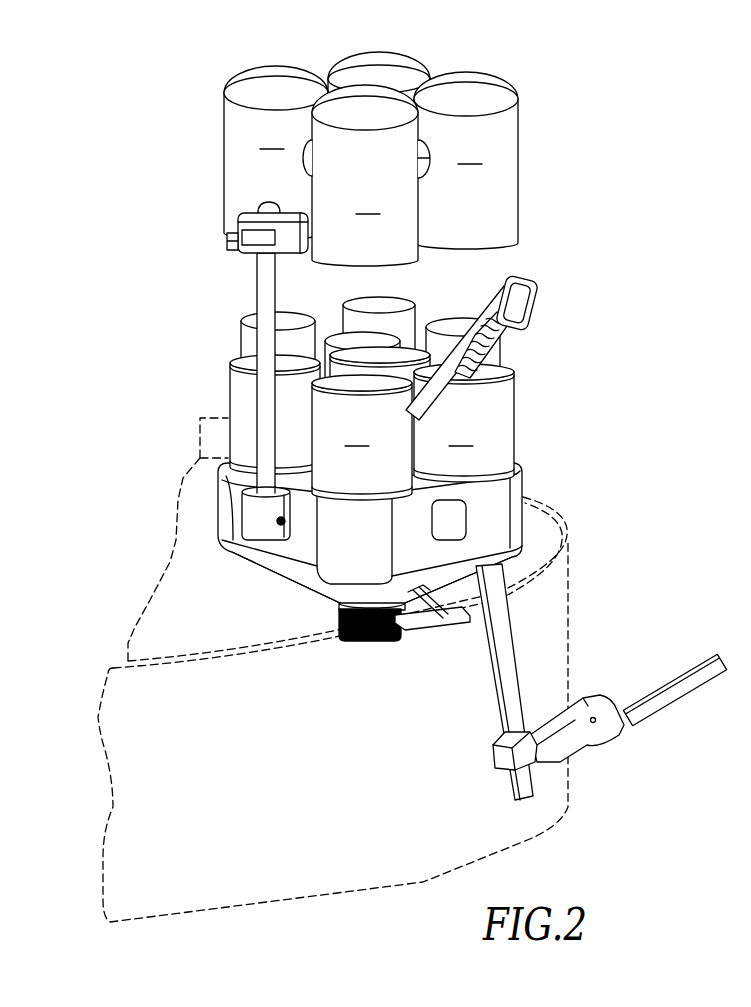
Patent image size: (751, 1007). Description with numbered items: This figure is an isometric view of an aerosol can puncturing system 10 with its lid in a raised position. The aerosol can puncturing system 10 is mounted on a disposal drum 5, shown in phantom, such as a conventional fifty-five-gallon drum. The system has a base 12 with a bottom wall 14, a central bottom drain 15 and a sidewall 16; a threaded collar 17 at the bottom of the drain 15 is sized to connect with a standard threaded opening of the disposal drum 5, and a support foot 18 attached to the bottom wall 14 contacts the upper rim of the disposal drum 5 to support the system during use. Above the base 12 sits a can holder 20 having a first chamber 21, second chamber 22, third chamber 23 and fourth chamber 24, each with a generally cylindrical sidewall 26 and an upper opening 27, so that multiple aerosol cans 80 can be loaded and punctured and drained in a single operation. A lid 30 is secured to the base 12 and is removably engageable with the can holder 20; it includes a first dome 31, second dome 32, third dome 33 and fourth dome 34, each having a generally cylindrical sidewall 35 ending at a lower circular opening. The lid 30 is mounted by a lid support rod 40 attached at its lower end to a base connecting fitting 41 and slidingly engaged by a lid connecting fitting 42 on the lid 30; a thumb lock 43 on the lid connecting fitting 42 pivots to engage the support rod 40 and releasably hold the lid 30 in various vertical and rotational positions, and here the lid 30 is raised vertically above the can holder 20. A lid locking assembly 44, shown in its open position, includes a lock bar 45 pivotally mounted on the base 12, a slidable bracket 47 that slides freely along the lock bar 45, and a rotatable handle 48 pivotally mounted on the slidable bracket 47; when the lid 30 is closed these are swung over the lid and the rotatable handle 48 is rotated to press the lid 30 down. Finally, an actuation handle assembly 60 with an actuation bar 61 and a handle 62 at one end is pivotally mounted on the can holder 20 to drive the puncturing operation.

The disposal drum 5 is at (498, 837).
The aerosol can puncturing system 10 is at (205, 72).
The base 12 is at (515, 500).
The bottom wall 14 is at (292, 583).
The central bottom drain 15 is at (340, 603).
The sidewall 16 is at (300, 550).
The threaded collar 17 is at (380, 645).
The support foot 18 is at (445, 628).
The can holder 20 is at (379, 380).
The first chamber 21 is at (362, 437).
The second chamber 22 is at (464, 423).
The third chamber 23 is at (370, 368).
The fourth chamber 24 is at (232, 392).
The cylindrical sidewall 26 is at (215, 445).
The upper opening 27 is at (235, 360).
The lid 30 is at (372, 148).
The first dome 31 is at (366, 175).
The second dome 32 is at (466, 160).
The third dome 33 is at (415, 80).
The fourth dome 34 is at (276, 152).
The cylindrical sidewall 35 is at (225, 138).
The lid support rod 40 is at (242, 368).
The base connecting fitting 41 is at (250, 520).
The lid connecting fitting 42 is at (242, 209).
The thumb lock 43 is at (230, 243).
The lid locking assembly 44 is at (601, 682).
The lock bar 45 is at (498, 628).
The slidable bracket 47 is at (548, 742).
The rotatable handle 48 is at (673, 710).
The actuation handle assembly 60 is at (502, 340).
The actuation bar 61 is at (481, 332).
The handle 62 is at (505, 288).
The aerosol cans 80 is at (292, 322).